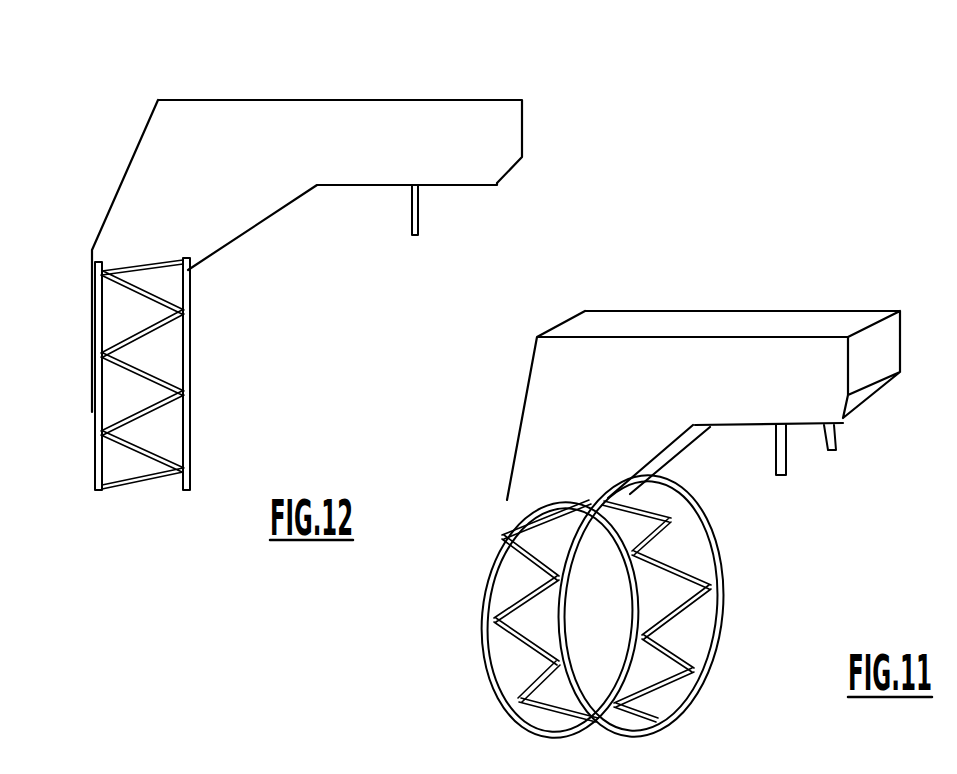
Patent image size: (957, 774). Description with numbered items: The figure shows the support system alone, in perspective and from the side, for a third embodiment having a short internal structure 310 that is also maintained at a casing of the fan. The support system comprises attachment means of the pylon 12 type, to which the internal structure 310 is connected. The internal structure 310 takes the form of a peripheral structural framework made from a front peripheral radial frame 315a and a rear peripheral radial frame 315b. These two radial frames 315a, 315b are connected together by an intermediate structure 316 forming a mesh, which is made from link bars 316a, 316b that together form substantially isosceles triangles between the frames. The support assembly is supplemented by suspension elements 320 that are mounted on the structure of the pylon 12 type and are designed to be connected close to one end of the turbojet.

In FIG. 12, the pylon 12 is at (347, 140).
In FIG. 11, the pylon 12 is at (718, 370).
In FIG. 12, the internal structure 310 is at (206, 409).
In FIG. 11, the internal structure 310 is at (664, 606).
In FIG. 12, the front peripheral radial frame 315a is at (98, 410).
In FIG. 11, the front peripheral radial frame 315a is at (482, 593).
In FIG. 12, the rear peripheral radial frame 315b is at (192, 417).
In FIG. 11, the rear peripheral radial frame 315b is at (697, 697).
In FIG. 12, the intermediate structure 316 is at (138, 453).
In FIG. 11, the intermediate structure 316 is at (623, 612).
In FIG. 11, the link bar 316a is at (700, 542).
In FIG. 11, the link bar 316b is at (705, 548).
In FIG. 12, the suspension elements 320 is at (421, 212).
In FIG. 11, the suspension elements 320 is at (833, 432).